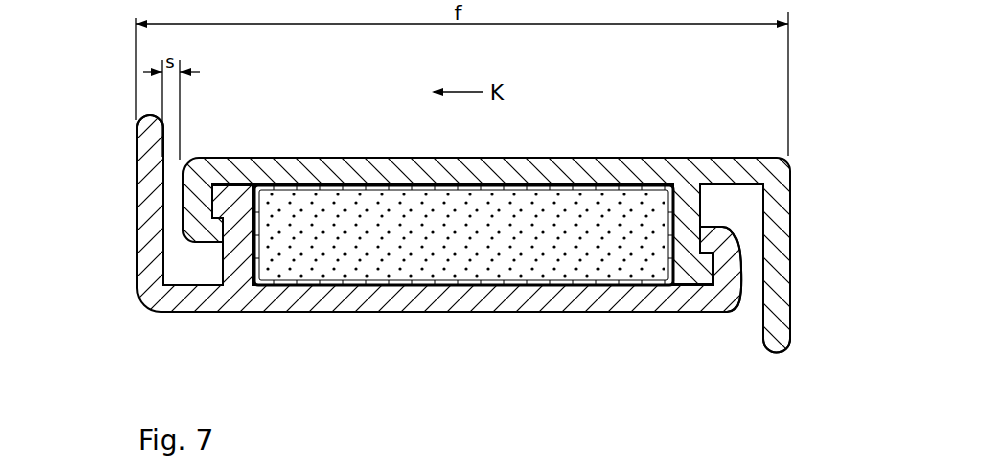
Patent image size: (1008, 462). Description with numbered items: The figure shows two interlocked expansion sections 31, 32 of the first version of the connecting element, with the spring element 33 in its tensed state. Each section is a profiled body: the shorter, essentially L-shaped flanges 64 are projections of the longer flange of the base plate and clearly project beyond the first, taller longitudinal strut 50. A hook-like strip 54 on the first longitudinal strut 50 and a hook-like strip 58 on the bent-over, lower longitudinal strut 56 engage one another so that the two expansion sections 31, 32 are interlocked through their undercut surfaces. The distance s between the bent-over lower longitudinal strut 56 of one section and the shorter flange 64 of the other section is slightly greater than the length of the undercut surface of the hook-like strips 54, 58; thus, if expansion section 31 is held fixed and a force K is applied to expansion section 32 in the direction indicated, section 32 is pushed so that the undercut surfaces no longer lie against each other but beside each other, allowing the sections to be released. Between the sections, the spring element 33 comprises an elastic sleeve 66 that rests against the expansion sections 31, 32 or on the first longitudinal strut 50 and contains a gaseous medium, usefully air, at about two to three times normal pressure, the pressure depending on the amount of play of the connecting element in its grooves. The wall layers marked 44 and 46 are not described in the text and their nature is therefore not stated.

The expansion section 31 is at (238, 325).
The expansion section 32 is at (648, 148).
The spring element 33 is at (509, 262).
The core layer of shell wall 44 is at (347, 172).
The outer skin layer of shell wall 46 is at (405, 158).
The first longitudinal strut 50 is at (700, 192).
The hook-like strip 54 is at (715, 267).
The bent-over lower longitudinal strut 56 is at (728, 277).
The hook-like strip 58 is at (720, 230).
The L-shaped flange 64 is at (148, 204).
The elastic sleeve 66 is at (610, 282).